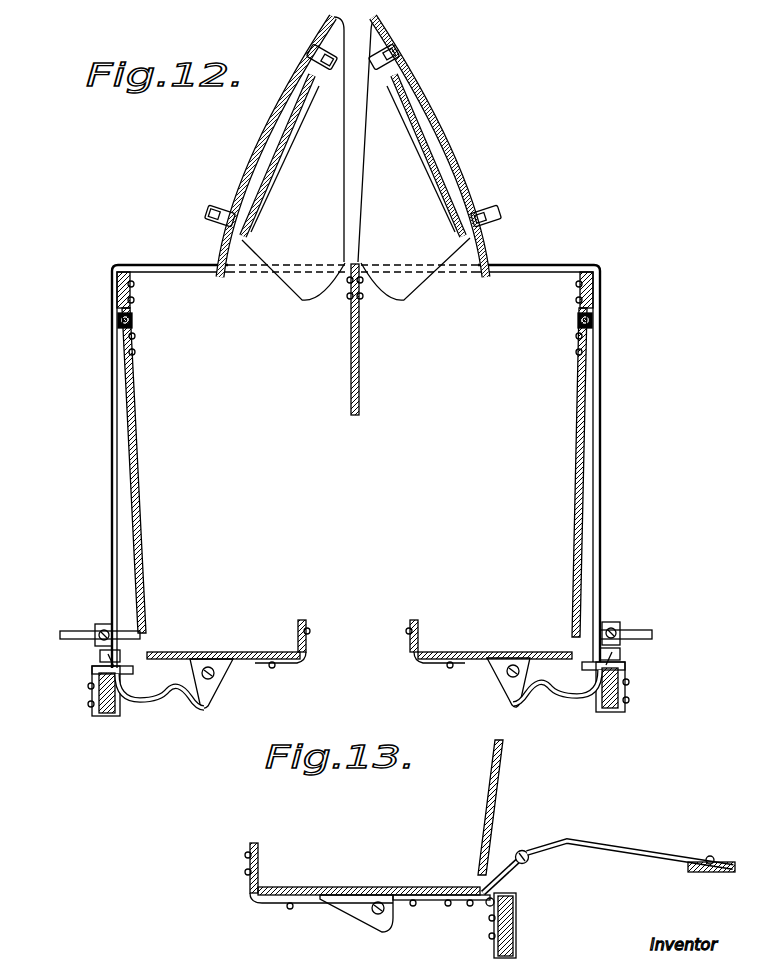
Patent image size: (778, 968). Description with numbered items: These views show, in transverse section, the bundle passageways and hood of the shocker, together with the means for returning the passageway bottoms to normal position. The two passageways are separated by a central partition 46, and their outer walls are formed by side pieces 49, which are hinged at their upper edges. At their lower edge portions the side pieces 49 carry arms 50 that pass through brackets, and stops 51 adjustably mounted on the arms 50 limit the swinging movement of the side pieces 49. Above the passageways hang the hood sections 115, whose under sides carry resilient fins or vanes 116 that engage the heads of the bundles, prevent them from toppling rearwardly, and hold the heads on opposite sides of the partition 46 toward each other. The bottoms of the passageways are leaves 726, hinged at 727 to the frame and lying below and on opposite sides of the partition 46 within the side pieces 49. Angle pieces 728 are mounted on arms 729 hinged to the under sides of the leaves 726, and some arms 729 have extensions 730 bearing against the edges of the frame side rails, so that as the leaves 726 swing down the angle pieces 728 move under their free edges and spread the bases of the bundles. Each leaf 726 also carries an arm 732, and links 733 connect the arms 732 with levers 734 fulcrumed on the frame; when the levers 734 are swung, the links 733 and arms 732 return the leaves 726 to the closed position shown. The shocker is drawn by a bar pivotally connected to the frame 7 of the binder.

In FIG. 12, the frame of the binder 7 is at (97, 705).
In FIG. 13, the frame of the binder 7 is at (517, 934).
In FIG. 12, the partition 46 is at (358, 390).
In FIG. 12, the side pieces 49 is at (143, 498).
In FIG. 13, the side pieces 49 is at (484, 808).
In FIG. 12, the arms 50 is at (76, 630).
In FIG. 12, the stops 51 is at (96, 645).
In FIG. 12, the hood sections 115 is at (240, 171).
In FIG. 12, the resilient fins or vanes 116 is at (277, 170).
In FIG. 12, the leaves 726 is at (240, 645).
In FIG. 13, the leaves 726 is at (343, 887).
In FIG. 13, the hinge 727 is at (480, 908).
In FIG. 12, the angle pieces 728 is at (301, 621).
In FIG. 13, the angle pieces 728 is at (262, 873).
In FIG. 12, the arms 729 is at (246, 678).
In FIG. 13, the arms 729 is at (362, 912).
In FIG. 12, the extensions 730 is at (150, 704).
In FIG. 13, the arm 732 is at (513, 875).
In FIG. 13, the links 733 is at (613, 852).
In FIG. 13, the levers 734 is at (710, 874).